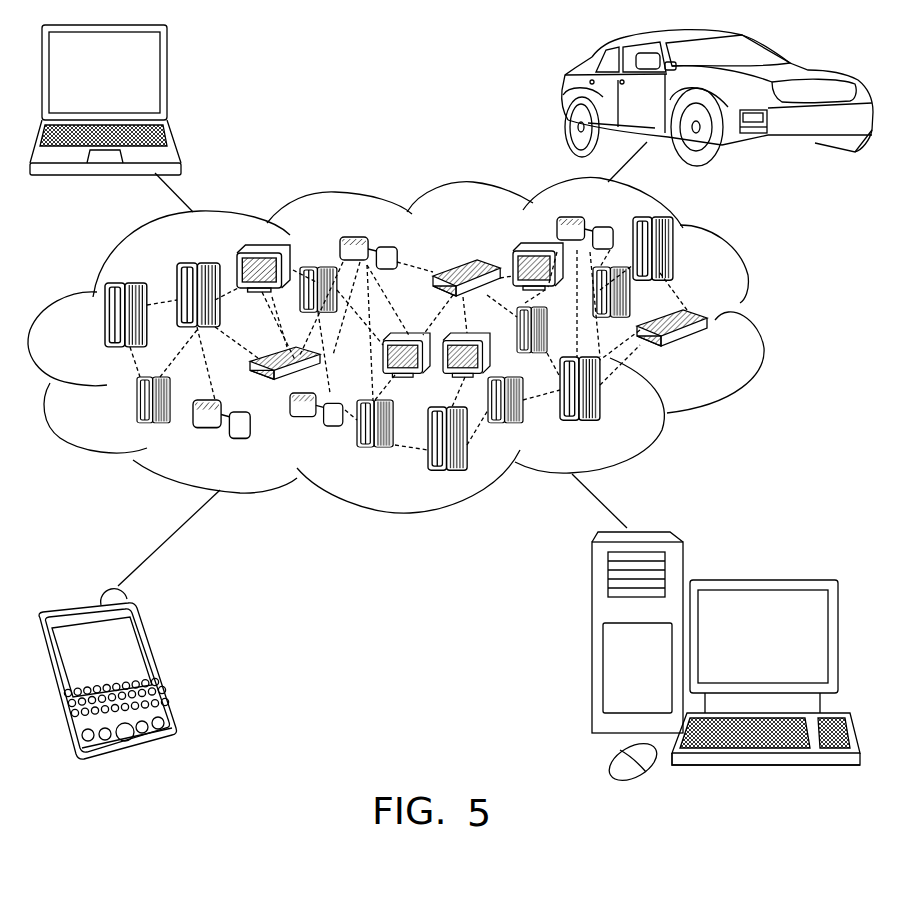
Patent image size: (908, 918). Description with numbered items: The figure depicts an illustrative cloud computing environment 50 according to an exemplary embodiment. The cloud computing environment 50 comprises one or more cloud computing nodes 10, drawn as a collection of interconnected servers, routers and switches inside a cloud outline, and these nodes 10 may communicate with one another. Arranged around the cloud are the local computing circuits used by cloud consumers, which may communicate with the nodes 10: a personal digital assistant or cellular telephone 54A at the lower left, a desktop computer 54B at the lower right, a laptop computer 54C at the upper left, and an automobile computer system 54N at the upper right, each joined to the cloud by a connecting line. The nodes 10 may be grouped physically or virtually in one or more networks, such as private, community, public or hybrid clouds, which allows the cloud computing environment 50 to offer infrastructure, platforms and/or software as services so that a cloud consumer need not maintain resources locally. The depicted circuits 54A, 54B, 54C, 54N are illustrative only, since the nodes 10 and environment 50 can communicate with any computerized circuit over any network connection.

The cloud computing node 10 is at (418, 364).
The cloud computing environment 50 is at (763, 323).
The personal digital assistant (PDA) or cellular telephone 54A is at (162, 663).
The desktop computer 54B is at (760, 580).
The laptop computer 54C is at (167, 82).
The automobile computer system 54N is at (563, 97).